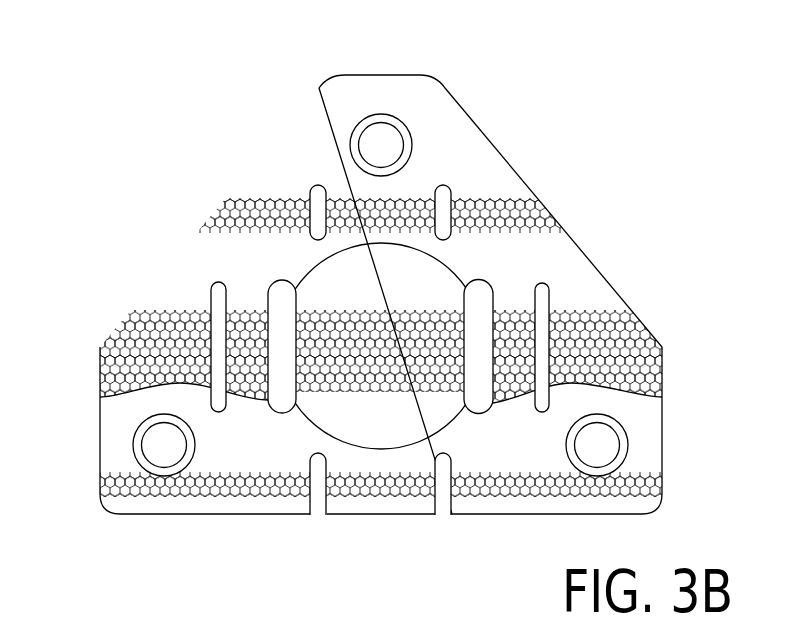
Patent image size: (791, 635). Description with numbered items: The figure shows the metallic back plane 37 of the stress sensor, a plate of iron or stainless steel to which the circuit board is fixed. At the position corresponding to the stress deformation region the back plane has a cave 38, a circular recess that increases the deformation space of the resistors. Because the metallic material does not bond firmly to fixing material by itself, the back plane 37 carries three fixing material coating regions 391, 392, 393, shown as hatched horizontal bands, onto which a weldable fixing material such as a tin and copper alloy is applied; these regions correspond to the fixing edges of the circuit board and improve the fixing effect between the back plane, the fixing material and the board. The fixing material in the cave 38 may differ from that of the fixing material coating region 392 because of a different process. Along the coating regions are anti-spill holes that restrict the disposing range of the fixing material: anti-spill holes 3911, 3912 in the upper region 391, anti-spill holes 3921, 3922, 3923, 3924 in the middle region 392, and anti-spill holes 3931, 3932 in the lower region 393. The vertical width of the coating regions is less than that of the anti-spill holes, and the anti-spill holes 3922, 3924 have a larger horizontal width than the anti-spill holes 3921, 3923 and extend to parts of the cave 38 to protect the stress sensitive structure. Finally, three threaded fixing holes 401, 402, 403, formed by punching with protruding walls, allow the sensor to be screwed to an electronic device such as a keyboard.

The metallic back plane 37 is at (148, 116).
The cave 38 is at (434, 272).
The fixing material coating region 391 is at (510, 200).
The anti-spill hole 3911 is at (443, 185).
The anti-spill hole 3912 is at (318, 185).
The fixing material coating region 392 is at (604, 311).
The anti-spill hole 3921 is at (542, 288).
The anti-spill hole 3922 is at (662, 397).
The anti-spill hole 3923 is at (218, 290).
The anti-spill hole 3924 is at (100, 397).
The fixing material coating region 393 is at (653, 480).
The anti-spill hole 3931 is at (443, 488).
The anti-spill hole 3932 is at (320, 488).
The fixing hole 401 is at (380, 114).
The fixing hole 402 is at (115, 427).
The fixing hole 403 is at (645, 427).